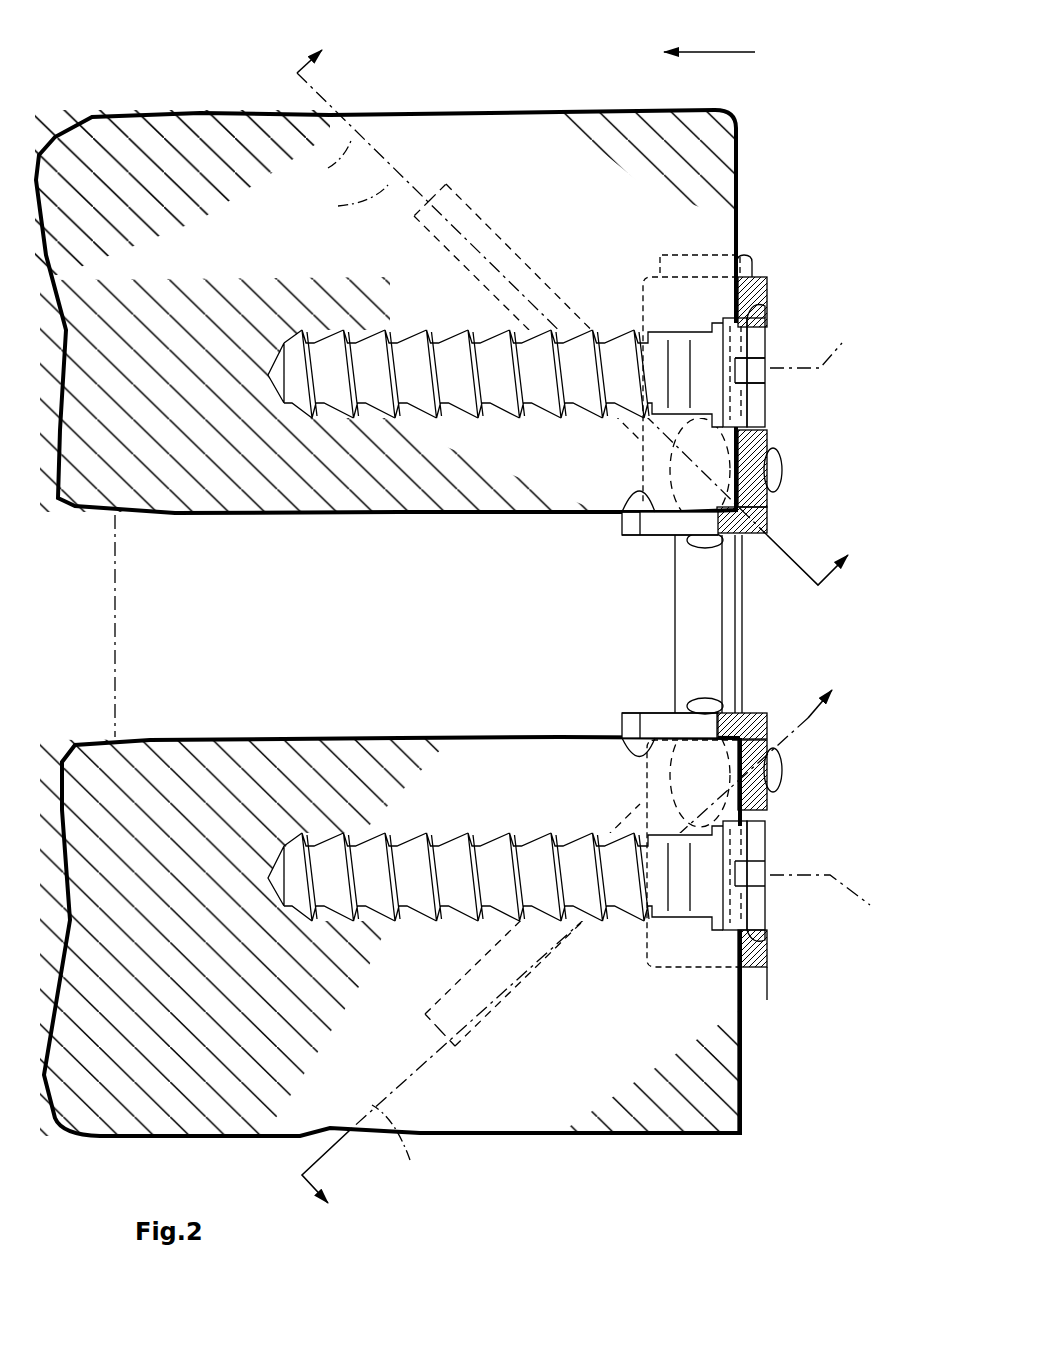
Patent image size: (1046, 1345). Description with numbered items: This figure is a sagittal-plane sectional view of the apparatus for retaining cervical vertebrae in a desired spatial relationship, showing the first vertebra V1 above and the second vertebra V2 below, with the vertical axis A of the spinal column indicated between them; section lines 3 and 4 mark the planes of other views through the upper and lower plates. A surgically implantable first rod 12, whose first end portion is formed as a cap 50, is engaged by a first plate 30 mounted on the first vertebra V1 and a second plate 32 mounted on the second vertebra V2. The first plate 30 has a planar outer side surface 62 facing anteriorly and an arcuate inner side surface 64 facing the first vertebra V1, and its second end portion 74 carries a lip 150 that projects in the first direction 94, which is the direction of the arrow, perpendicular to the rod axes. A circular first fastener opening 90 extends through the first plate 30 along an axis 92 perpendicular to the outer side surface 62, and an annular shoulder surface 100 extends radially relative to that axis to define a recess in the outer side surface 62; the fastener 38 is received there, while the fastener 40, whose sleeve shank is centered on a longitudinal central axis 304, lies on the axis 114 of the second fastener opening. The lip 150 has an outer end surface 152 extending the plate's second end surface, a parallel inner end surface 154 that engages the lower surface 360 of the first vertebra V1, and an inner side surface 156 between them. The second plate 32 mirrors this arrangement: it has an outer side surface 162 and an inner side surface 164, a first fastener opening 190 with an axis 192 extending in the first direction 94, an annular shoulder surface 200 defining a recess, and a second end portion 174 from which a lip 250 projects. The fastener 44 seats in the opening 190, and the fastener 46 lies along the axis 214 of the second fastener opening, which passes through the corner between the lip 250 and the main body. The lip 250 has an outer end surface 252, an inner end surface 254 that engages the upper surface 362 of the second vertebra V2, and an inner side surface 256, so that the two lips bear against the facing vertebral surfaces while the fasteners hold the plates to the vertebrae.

The first rod 12 is at (748, 626).
The first plate 30 is at (768, 265).
The second plate 32 is at (770, 970).
The fastener 38 is at (772, 406).
The fastener 40 is at (495, 212).
The fastener 44 is at (777, 837).
The fastener 46 is at (788, 780).
The cap 50 is at (750, 258).
The outer side surface 62 is at (773, 507).
The inner side surface 64 is at (735, 292).
The second end portion 74 is at (770, 528).
The first fastener opening 90 is at (778, 300).
The axis 92 is at (817, 339).
The first direction 94 is at (711, 37).
The annular shoulder surface 100 is at (774, 319).
The axis 114 is at (316, 161).
The lip 150 is at (627, 541).
The outer end surface 152 is at (640, 540).
The inner end surface 154 is at (650, 510).
The inner side surface 156 is at (625, 520).
The outer side surface 162 is at (785, 767).
The inner side surface 164 is at (722, 975).
The second end portion 174 is at (790, 726).
The first fastener opening 190 is at (777, 939).
The axis 192 is at (845, 900).
The annular shoulder surface 200 is at (770, 895).
The axis 214 is at (418, 1145).
The lip 250 is at (632, 712).
The outer end surface 252 is at (640, 712).
The inner end surface 254 is at (650, 736).
The inner side surface 256 is at (622, 717).
The longitudinal central axis 304 is at (339, 203).
The lower surface 360 is at (440, 512).
The upper surface 362 is at (418, 735).
The section line 3- 3 is at (582, 306).
The section line 4- 4 is at (584, 956).
The first vertebra V1 is at (133, 104).
The second vertebra V2 is at (203, 733).
The axis A is at (118, 556).